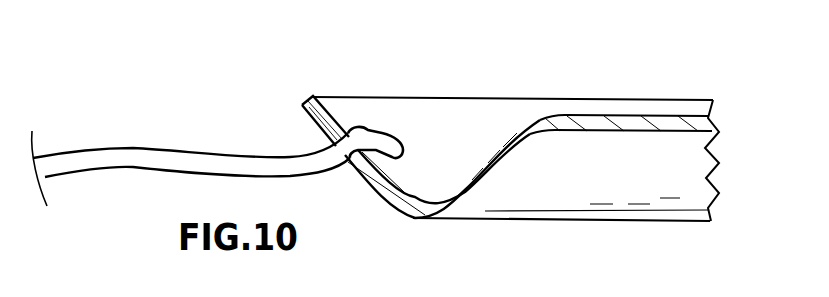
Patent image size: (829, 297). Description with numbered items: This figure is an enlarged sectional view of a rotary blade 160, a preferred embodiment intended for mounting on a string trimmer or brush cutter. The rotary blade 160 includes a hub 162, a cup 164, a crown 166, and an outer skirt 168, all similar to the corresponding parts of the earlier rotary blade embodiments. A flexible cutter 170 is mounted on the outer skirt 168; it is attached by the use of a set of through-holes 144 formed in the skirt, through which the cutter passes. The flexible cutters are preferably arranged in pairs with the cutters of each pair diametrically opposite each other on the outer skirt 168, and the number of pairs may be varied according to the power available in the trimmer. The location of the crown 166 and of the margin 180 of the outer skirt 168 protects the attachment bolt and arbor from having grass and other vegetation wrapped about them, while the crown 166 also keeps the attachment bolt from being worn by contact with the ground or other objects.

The through-holes 144 is at (346, 133).
The rotary blade 160 is at (515, 154).
The hub 162 is at (652, 135).
The cup 164 is at (535, 207).
The crown 166 is at (413, 220).
The outer skirt 168 is at (315, 132).
The flexible cutter 170 is at (133, 148).
The margin 180 is at (312, 97).